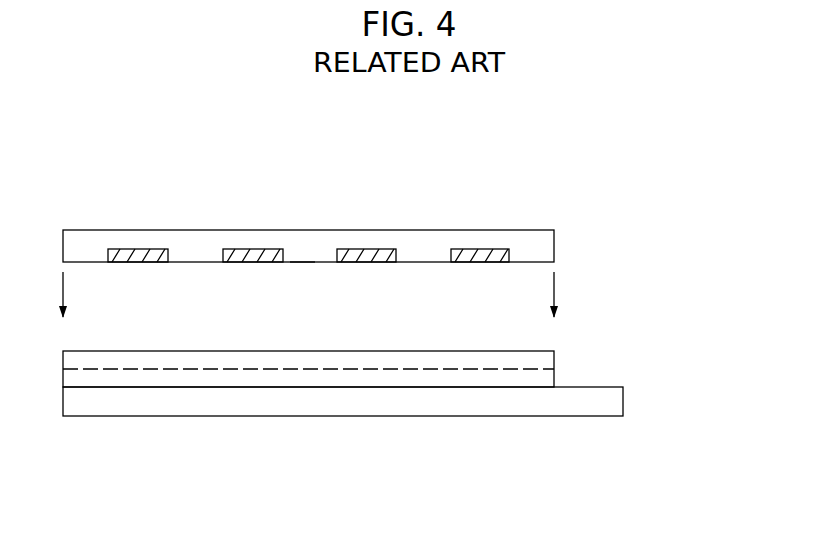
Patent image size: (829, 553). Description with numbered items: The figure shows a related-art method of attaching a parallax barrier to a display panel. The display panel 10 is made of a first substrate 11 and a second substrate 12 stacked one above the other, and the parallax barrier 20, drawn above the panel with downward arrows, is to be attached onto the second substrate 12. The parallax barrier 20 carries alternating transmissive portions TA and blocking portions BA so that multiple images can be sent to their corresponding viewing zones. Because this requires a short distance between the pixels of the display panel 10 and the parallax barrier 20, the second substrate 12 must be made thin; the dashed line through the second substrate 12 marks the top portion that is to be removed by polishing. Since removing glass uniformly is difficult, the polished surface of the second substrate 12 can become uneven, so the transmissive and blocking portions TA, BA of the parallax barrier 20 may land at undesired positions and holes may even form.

The display panel 10 is at (410, 379).
The first substrate 11 is at (615, 403).
The second substrate 12 is at (545, 377).
The parallax barrier 20 is at (590, 250).
The transmissive portion TA is at (303, 243).
The blocking portion BA is at (372, 240).